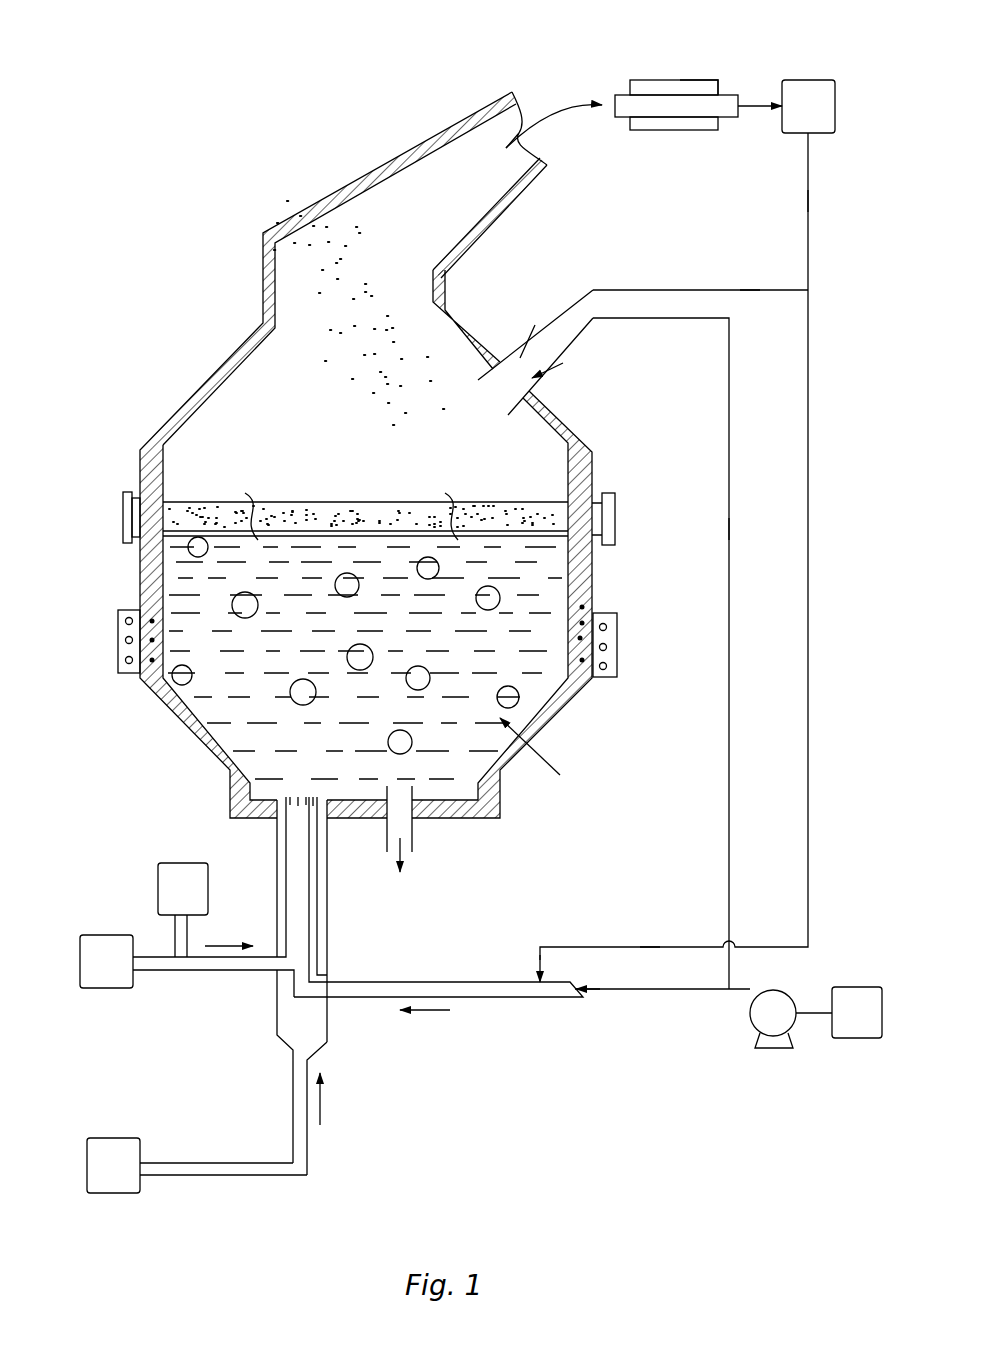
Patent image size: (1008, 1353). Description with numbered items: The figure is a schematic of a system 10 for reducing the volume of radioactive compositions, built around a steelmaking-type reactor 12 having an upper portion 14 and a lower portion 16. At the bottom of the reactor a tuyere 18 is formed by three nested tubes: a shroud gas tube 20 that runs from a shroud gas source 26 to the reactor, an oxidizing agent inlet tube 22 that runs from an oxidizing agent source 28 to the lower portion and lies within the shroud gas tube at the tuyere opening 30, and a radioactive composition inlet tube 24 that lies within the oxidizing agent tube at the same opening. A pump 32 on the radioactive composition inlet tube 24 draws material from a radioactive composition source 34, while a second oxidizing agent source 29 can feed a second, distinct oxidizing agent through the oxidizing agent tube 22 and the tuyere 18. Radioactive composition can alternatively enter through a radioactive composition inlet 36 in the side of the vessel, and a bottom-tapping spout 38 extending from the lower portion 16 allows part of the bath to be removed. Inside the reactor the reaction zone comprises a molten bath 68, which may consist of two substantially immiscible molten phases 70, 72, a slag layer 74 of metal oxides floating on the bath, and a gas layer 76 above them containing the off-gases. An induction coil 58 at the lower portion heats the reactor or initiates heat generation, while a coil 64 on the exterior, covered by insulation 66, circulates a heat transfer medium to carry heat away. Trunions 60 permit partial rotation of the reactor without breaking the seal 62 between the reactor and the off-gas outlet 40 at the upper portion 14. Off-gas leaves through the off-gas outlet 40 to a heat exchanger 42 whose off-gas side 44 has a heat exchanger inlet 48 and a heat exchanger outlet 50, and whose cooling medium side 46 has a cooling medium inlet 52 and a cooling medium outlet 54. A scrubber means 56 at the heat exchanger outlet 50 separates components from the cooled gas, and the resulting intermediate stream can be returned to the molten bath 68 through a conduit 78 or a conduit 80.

The system 10 is at (228, 272).
The reactor 12 is at (140, 571).
The upper portion 14 is at (190, 398).
The lower portion 16 is at (182, 725).
The tuyere 18 is at (335, 877).
The shroud gas tube 20 is at (278, 1022).
The oxidizing agent inlet tube 22 is at (183, 970).
The radioactive composition inlet tube 24 is at (410, 982).
The shroud gas source 26 is at (129, 1181).
The oxidizing agent source 28 is at (122, 977).
The second oxidizing agent source 29 is at (200, 905).
The tuyere opening 30 is at (300, 795).
The pump 32 is at (755, 1038).
The radioactive composition source 34 is at (874, 1029).
The radioactive composition inlet 36 is at (553, 366).
The bottom-tapping spout 38 is at (415, 840).
The off-gas outlet 40 is at (418, 145).
The heat exchanger 42 is at (671, 92).
The off-gas side 44 is at (627, 110).
The cooling medium side 46 is at (684, 80).
The heat exchanger inlet 48 is at (615, 97).
The heat exchanger outlet 50 is at (743, 103).
The cooling medium inlet 52 is at (700, 80).
The cooling medium outlet 54 is at (645, 131).
The scrubber means 56 is at (826, 122).
The induction coil 58 is at (585, 606).
The trunions 60 is at (123, 515).
The seal 62 is at (446, 287).
The coil 64 is at (617, 627).
The insulation 66 is at (617, 666).
The molten bath 68 is at (542, 757).
The immiscible molten phase 70 is at (272, 670).
The immiscible molten phase 72 is at (428, 580).
The slag layer 74 is at (385, 500).
The gas layer 76 is at (375, 220).
The conduit 78 is at (656, 290).
The conduit 80 is at (810, 684).